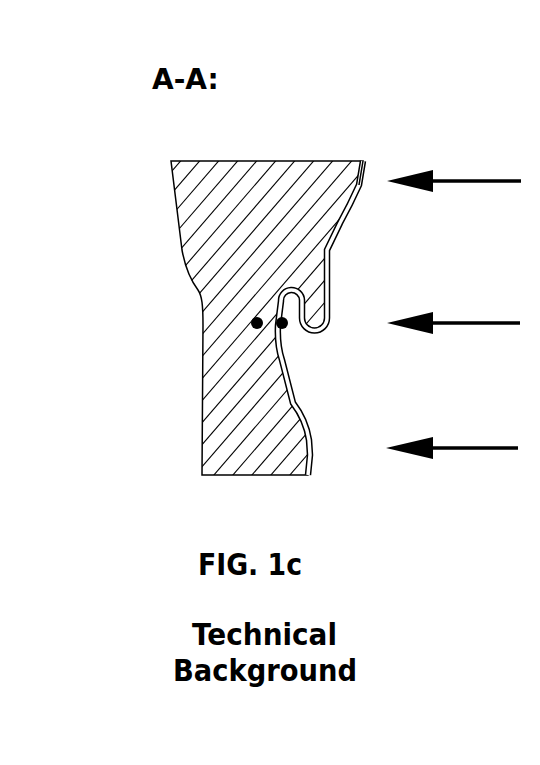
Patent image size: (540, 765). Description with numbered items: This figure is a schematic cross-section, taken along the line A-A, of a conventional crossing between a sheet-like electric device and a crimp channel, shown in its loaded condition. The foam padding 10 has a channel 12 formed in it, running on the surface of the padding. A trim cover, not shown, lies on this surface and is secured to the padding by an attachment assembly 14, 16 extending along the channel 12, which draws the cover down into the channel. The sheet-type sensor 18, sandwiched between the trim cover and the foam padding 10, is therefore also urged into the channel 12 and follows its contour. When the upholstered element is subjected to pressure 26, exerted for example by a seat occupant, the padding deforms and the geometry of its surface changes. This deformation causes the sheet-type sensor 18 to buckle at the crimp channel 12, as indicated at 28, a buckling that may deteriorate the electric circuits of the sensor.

The foam padding 10 is at (256, 162).
The channel 12 is at (368, 269).
The attachment assembly 14 is at (252, 322).
The attachment assembly 16 is at (288, 329).
The sheet-type sensor 18 is at (364, 164).
The pressure 26 is at (477, 184).
The buckling 28 is at (335, 327).